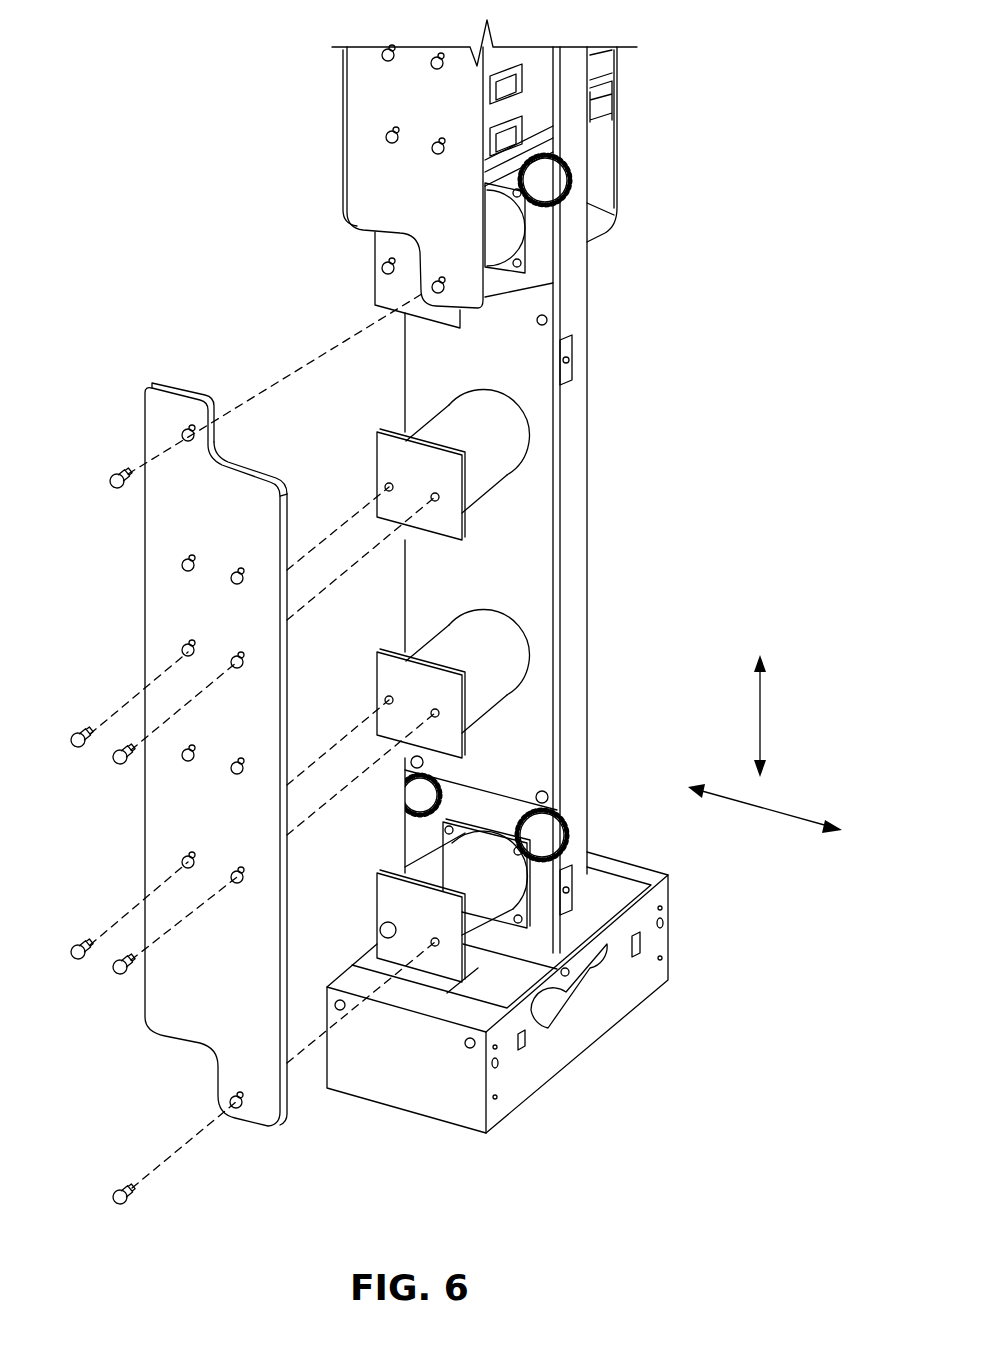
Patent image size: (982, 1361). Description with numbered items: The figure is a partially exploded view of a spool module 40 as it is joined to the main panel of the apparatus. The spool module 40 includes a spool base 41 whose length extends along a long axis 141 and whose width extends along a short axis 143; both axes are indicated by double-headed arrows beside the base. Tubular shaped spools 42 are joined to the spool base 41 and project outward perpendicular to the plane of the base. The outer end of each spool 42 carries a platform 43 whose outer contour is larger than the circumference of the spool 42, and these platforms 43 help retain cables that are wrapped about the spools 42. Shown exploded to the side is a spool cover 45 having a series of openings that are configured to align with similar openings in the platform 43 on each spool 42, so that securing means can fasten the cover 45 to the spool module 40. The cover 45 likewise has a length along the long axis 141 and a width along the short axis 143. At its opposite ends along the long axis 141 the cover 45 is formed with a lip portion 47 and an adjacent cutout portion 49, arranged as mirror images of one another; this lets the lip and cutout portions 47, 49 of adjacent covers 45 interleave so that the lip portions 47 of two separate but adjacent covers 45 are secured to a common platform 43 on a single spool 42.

The spool module 40 is at (124, 586).
The spool base 41 is at (527, 618).
The spool 42 is at (492, 462).
The platform 43 is at (383, 460).
The spool cover 45 is at (158, 530).
The lip portion 47 is at (157, 412).
The cutout portion 49 is at (222, 372).
The long axis 141 is at (760, 720).
The short axis 143 is at (758, 807).